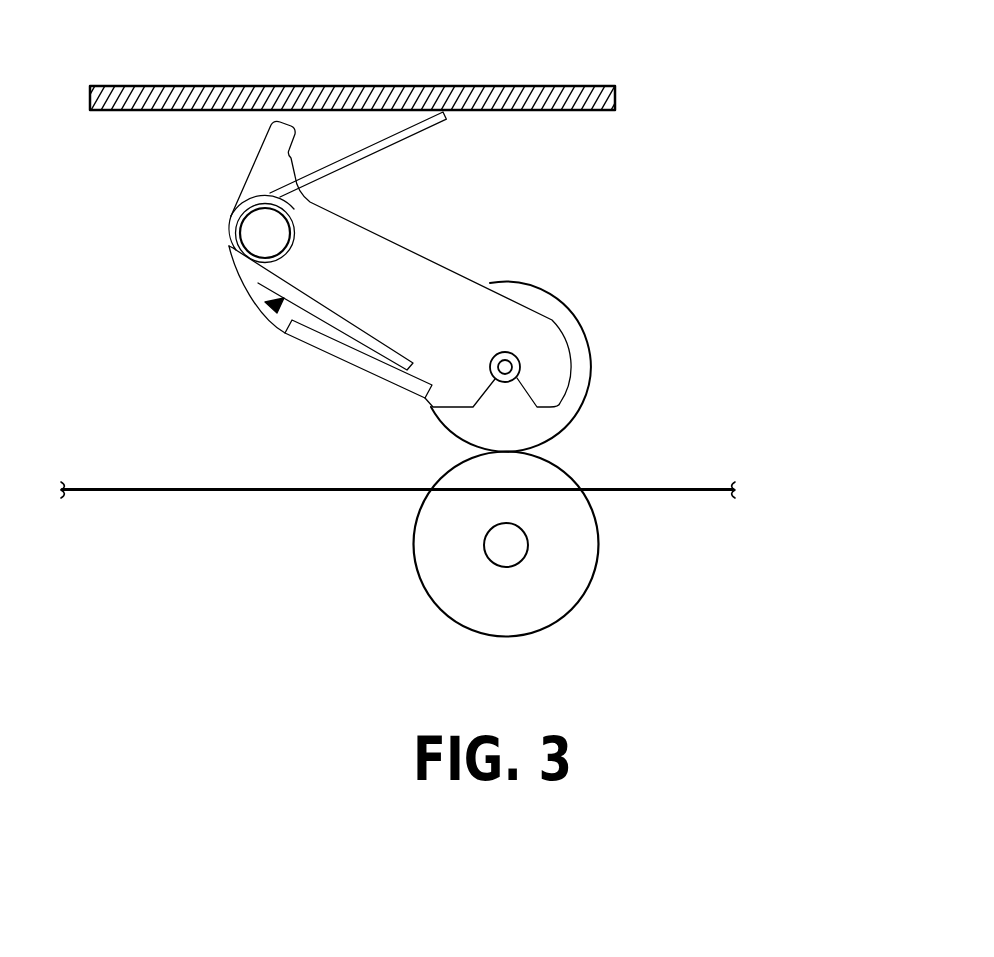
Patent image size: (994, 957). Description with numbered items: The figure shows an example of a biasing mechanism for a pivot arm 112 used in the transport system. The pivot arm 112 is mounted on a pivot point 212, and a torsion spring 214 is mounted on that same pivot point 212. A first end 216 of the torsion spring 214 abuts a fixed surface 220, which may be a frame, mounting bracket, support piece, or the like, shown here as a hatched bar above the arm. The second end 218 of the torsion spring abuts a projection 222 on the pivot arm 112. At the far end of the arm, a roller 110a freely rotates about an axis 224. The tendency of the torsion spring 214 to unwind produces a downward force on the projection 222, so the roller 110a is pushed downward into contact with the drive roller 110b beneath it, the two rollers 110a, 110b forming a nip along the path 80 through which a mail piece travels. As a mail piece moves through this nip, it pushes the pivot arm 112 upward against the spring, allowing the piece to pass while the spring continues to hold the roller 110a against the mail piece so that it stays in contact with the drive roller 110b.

The media sheet path 80 is at (648, 488).
The roller 110a is at (591, 367).
The drive roller 110b is at (598, 557).
The pivot arm 112 is at (423, 290).
The pivot point 212 is at (260, 237).
The torsion spring 214 is at (268, 308).
The first end 216 is at (389, 150).
The second end 218 is at (367, 330).
The fixed surface 220 is at (371, 86).
The projection 222 is at (363, 366).
The axis 224 is at (518, 356).